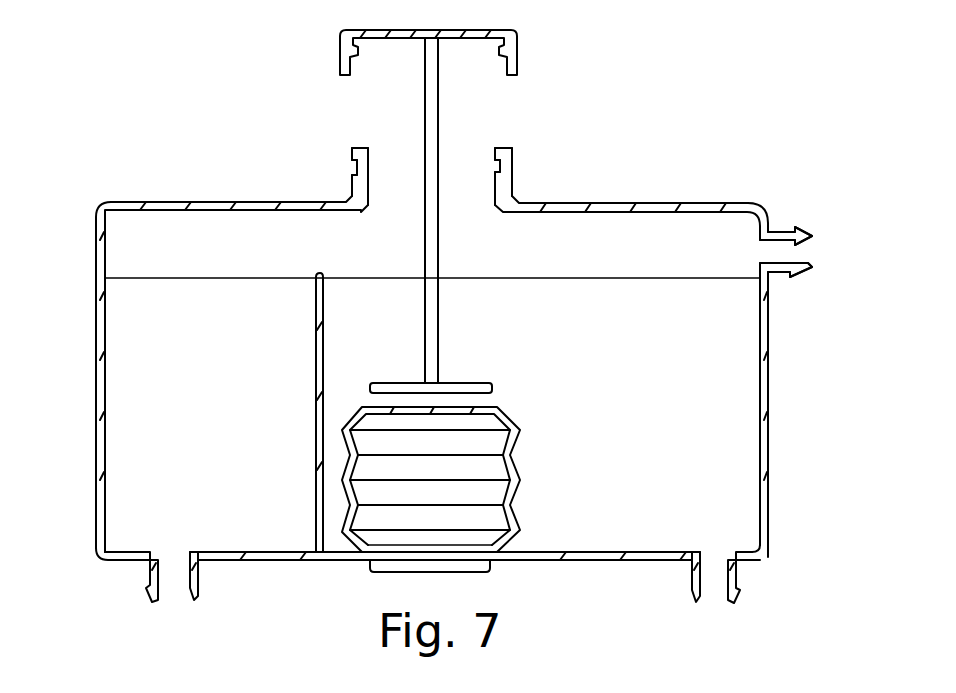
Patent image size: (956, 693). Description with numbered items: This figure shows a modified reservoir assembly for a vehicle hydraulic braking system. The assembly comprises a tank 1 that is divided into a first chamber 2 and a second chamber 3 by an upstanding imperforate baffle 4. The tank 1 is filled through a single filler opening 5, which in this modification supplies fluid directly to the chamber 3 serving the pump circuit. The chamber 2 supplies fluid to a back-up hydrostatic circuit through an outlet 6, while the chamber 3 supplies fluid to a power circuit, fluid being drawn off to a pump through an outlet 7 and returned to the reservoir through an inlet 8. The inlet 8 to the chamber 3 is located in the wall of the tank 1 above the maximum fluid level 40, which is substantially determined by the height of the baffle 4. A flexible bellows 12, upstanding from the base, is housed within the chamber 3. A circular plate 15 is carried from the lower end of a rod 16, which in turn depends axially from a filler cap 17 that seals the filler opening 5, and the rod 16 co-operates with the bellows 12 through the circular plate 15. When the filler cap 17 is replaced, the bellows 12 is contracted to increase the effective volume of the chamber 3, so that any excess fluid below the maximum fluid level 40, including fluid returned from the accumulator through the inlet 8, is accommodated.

The tank 1 is at (675, 203).
The first chamber 2 is at (128, 502).
The second chamber 3 is at (730, 441).
The baffle 4 is at (316, 338).
The filler opening 5 is at (512, 180).
The outlet 6 is at (180, 587).
The outlet 7 is at (712, 598).
The inlet 8 is at (790, 255).
The flexible bellows 12 is at (470, 507).
The circular plate 15 is at (472, 388).
The rod 16 is at (437, 215).
The filler cap 17 is at (518, 54).
The maximum fluid level 40 is at (206, 278).